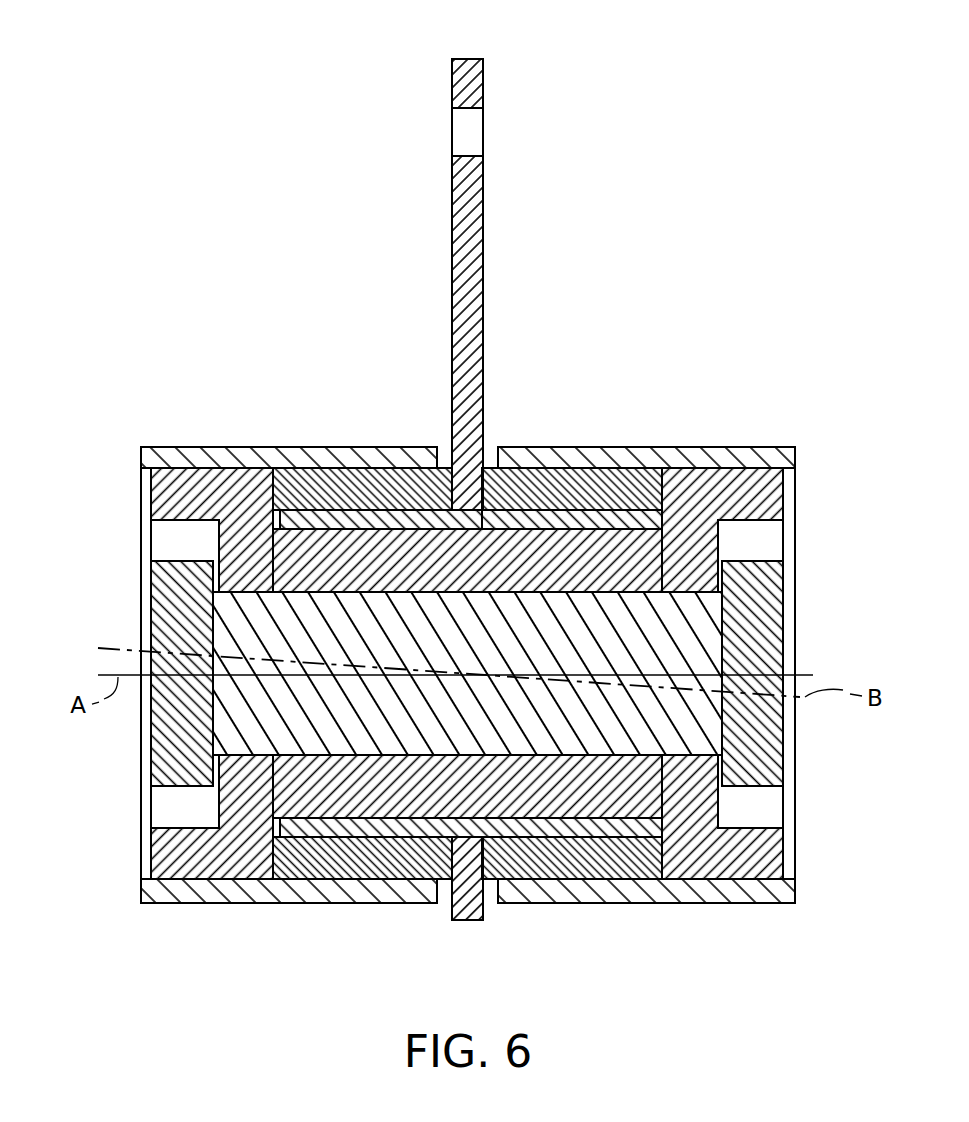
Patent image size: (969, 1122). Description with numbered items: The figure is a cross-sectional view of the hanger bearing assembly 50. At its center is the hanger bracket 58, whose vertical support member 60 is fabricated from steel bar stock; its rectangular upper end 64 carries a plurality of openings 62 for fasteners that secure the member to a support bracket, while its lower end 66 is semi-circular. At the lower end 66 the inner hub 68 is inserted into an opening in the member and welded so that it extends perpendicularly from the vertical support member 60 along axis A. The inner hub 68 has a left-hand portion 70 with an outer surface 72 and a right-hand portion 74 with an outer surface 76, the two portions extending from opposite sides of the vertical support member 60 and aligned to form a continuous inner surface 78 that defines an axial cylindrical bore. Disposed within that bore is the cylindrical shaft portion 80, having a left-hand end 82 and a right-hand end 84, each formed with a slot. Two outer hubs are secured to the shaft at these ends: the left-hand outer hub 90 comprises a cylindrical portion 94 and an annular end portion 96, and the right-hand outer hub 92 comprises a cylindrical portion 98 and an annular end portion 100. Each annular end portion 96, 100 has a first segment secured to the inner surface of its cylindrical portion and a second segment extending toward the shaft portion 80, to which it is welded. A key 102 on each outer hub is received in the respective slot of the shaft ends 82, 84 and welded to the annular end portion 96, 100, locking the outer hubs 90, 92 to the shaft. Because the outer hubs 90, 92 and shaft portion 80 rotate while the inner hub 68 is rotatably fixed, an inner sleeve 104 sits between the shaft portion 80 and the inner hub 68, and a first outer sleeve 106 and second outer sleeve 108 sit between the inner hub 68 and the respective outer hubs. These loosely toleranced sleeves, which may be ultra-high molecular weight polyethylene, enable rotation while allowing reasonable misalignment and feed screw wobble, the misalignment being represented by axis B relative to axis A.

The hanger bearing assembly 50 is at (658, 122).
The hanger bracket 58 is at (449, 248).
The vertical support member 60 is at (478, 188).
The openings 62 is at (467, 110).
The upper end 64 is at (452, 75).
The lower end 66 is at (478, 910).
The inner hub 68 is at (625, 828).
The left-hand portion 70 is at (303, 850).
The outer surface 72 is at (368, 830).
The right-hand portion 74 is at (640, 520).
The outer surface 76 is at (577, 507).
The continuous inner surface 78 is at (497, 531).
The cylindrical shaft portion 80 is at (688, 628).
The left-hand end 82 is at (250, 725).
The right-hand end 84 is at (688, 733).
The left-hand outer hub 90 is at (294, 441).
The right-hand outer hub 92 is at (742, 907).
The cylindrical portion 94 is at (197, 453).
The annular end portion 96 is at (190, 857).
The cylindrical portion 98 is at (766, 455).
The annular end portion 100 is at (743, 853).
The key 102 is at (185, 598).
The inner sleeve 104 is at (557, 802).
The first outer sleeve 106 is at (395, 485).
The second outer sleeve 108 is at (559, 478).